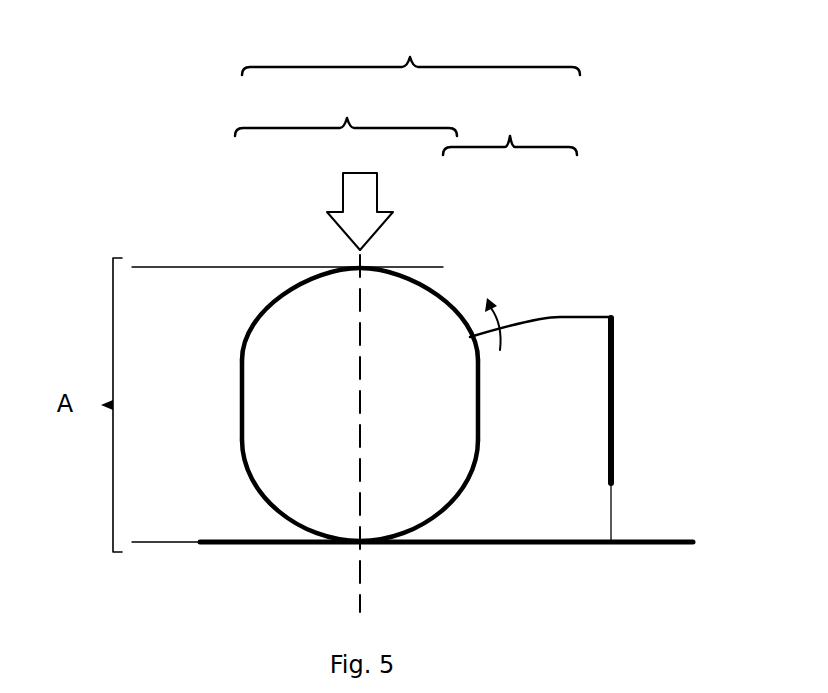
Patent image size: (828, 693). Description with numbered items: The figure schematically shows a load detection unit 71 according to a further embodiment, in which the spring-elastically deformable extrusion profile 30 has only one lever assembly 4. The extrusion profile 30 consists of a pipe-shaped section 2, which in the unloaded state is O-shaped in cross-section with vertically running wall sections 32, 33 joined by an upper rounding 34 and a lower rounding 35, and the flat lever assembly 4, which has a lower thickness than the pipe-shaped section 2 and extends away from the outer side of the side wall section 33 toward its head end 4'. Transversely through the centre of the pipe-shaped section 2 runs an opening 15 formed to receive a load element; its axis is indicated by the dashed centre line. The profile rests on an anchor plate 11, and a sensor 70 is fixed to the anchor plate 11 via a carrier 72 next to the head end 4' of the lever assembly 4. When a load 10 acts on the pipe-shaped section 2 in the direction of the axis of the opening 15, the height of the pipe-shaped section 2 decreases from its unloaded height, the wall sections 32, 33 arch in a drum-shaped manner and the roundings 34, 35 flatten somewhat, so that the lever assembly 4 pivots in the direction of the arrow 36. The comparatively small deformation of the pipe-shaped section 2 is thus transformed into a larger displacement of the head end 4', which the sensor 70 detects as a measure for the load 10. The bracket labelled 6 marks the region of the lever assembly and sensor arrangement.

The pipe-shaped section 2 is at (346, 111).
The lever assembly 4 is at (540, 298).
The head end of the lever assembly 4' is at (646, 266).
The stop device 6 is at (510, 125).
The load 10 is at (350, 224).
The anchor plate 11 is at (543, 543).
The opening 15 is at (363, 592).
The extrusion profile 30 is at (411, 40).
The vertical wall section 32 is at (238, 398).
The vertical wall section 33 is at (474, 402).
The upper rounding 34 is at (440, 292).
The lower rounding 35 is at (445, 510).
The arrow 36 is at (515, 333).
The sensor 70 is at (605, 455).
The load detection unit 71 is at (200, 129).
The carrier 72 is at (606, 510).